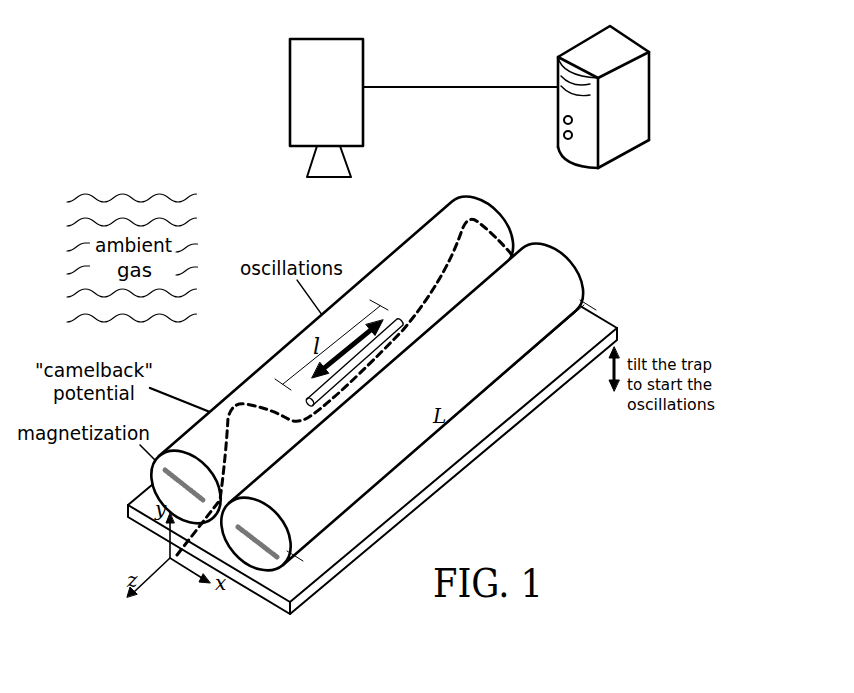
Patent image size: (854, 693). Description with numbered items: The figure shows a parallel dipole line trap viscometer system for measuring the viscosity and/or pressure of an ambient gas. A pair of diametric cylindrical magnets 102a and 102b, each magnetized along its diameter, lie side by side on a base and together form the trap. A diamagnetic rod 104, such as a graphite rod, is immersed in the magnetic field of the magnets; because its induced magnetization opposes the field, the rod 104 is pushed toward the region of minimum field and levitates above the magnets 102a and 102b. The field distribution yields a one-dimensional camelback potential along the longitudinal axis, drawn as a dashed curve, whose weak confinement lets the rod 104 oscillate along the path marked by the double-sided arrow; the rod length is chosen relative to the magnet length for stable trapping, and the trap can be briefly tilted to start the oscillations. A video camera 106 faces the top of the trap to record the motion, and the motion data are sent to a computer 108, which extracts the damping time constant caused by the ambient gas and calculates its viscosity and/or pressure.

The diametric cylindrical magnet 102a is at (422, 288).
The diametric cylindrical magnet 102b is at (517, 321).
The diamagnetic rod 104 is at (360, 367).
The video camera 106 is at (290, 95).
The computer 108 is at (622, 158).